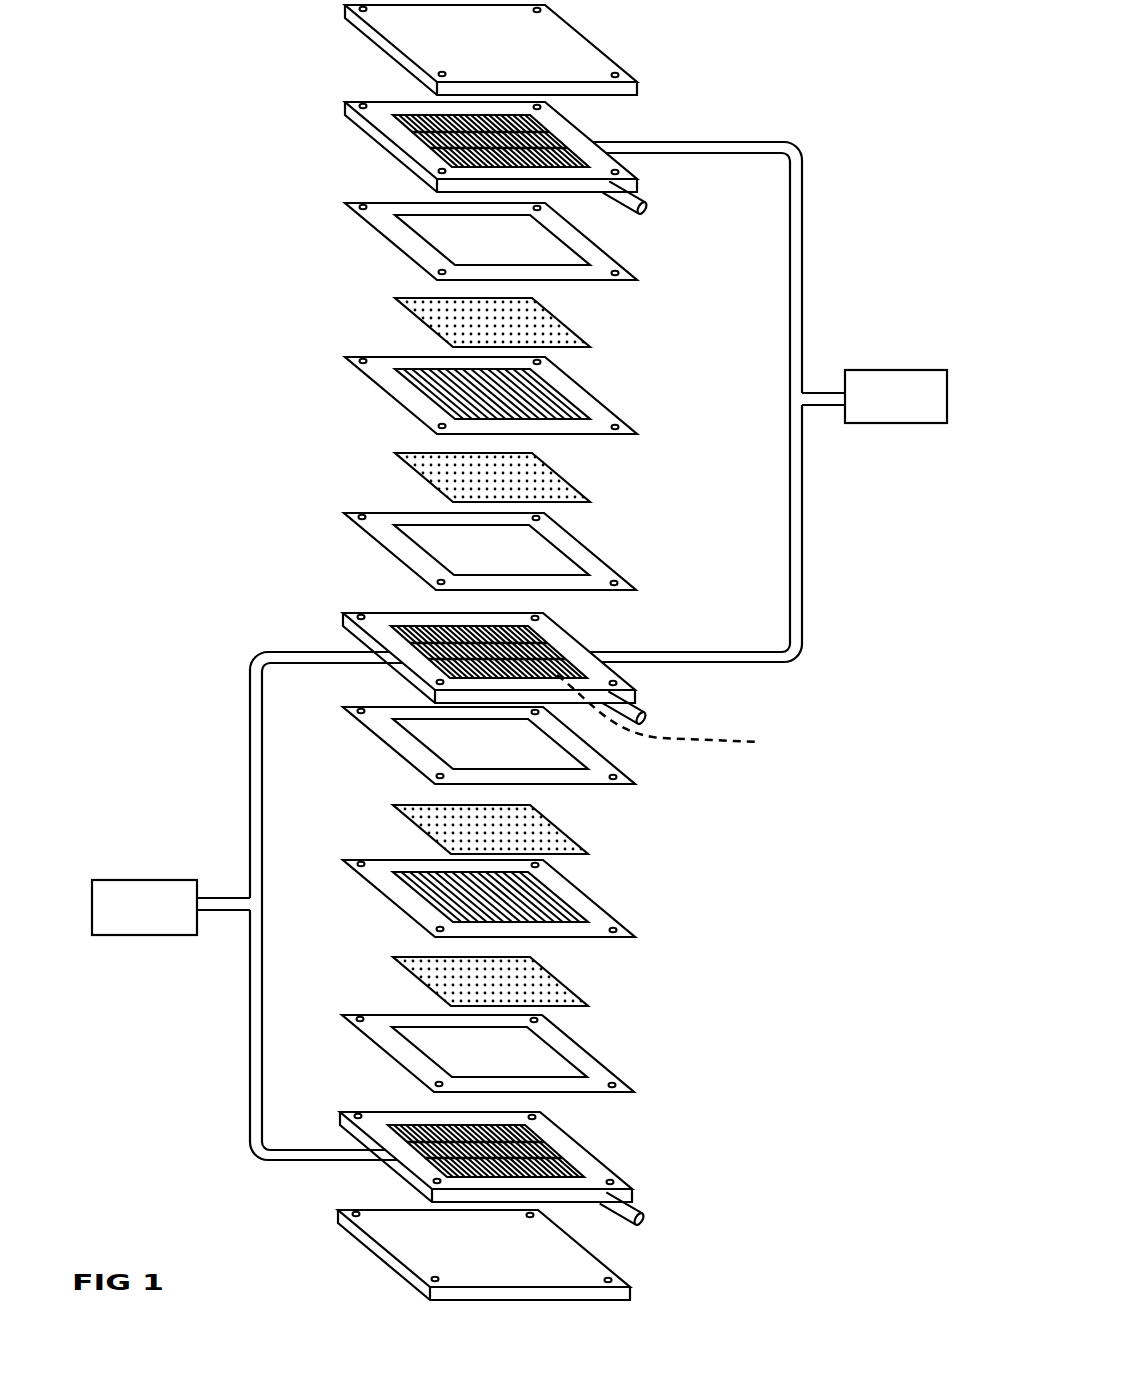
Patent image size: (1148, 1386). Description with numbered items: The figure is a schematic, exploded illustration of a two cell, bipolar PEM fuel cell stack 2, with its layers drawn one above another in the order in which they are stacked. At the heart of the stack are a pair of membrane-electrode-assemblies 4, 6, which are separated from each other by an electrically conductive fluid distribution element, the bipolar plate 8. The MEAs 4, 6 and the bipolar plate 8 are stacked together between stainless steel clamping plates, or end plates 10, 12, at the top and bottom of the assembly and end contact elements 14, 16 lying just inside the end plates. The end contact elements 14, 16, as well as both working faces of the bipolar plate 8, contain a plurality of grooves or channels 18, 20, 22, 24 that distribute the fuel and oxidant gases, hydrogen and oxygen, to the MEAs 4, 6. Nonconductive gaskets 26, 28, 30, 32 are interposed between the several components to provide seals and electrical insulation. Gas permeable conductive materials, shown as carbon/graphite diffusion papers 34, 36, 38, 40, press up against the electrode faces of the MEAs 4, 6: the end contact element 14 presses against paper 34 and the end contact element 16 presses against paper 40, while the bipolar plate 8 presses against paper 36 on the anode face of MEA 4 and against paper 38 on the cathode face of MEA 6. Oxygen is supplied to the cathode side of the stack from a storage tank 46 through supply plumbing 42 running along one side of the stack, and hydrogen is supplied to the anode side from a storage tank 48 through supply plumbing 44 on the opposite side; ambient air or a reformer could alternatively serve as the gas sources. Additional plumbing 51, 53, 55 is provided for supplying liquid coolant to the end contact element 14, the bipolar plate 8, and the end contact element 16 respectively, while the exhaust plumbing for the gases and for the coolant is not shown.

The bipolar fuel cell stack 2 is at (582, 652).
The membrane-electrode-assembly 4 is at (387, 397).
The membrane-electrode-assembly 6 is at (610, 906).
The bipolar plate 8 is at (514, 674).
The end plate 10 is at (388, 45).
The end plate 12 is at (617, 1269).
The end contact element 14 is at (493, 143).
The end contact element 16 is at (557, 1156).
The channels 18 is at (548, 138).
The channels 20 is at (410, 628).
The channels 22 is at (678, 715).
The channels 24 is at (548, 1140).
The nonconductive gasket 26 is at (387, 228).
The nonconductive gasket 28 is at (387, 548).
The nonconductive gasket 30 is at (630, 782).
The nonconductive gasket 32 is at (590, 1057).
The carbon/graphite diffusion paper 34 is at (410, 312).
The carbon/graphite diffusion paper 36 is at (417, 472).
The carbon/graphite diffusion paper 38 is at (567, 835).
The carbon/graphite diffusion paper 40 is at (567, 985).
The supply plumbing 42 is at (803, 565).
The supply plumbing 44 is at (255, 697).
The storage tank 46 is at (893, 368).
The storage tank 48 is at (113, 882).
The plumbing 51 is at (640, 200).
The plumbing 53 is at (643, 708).
The plumbing 55 is at (640, 1210).